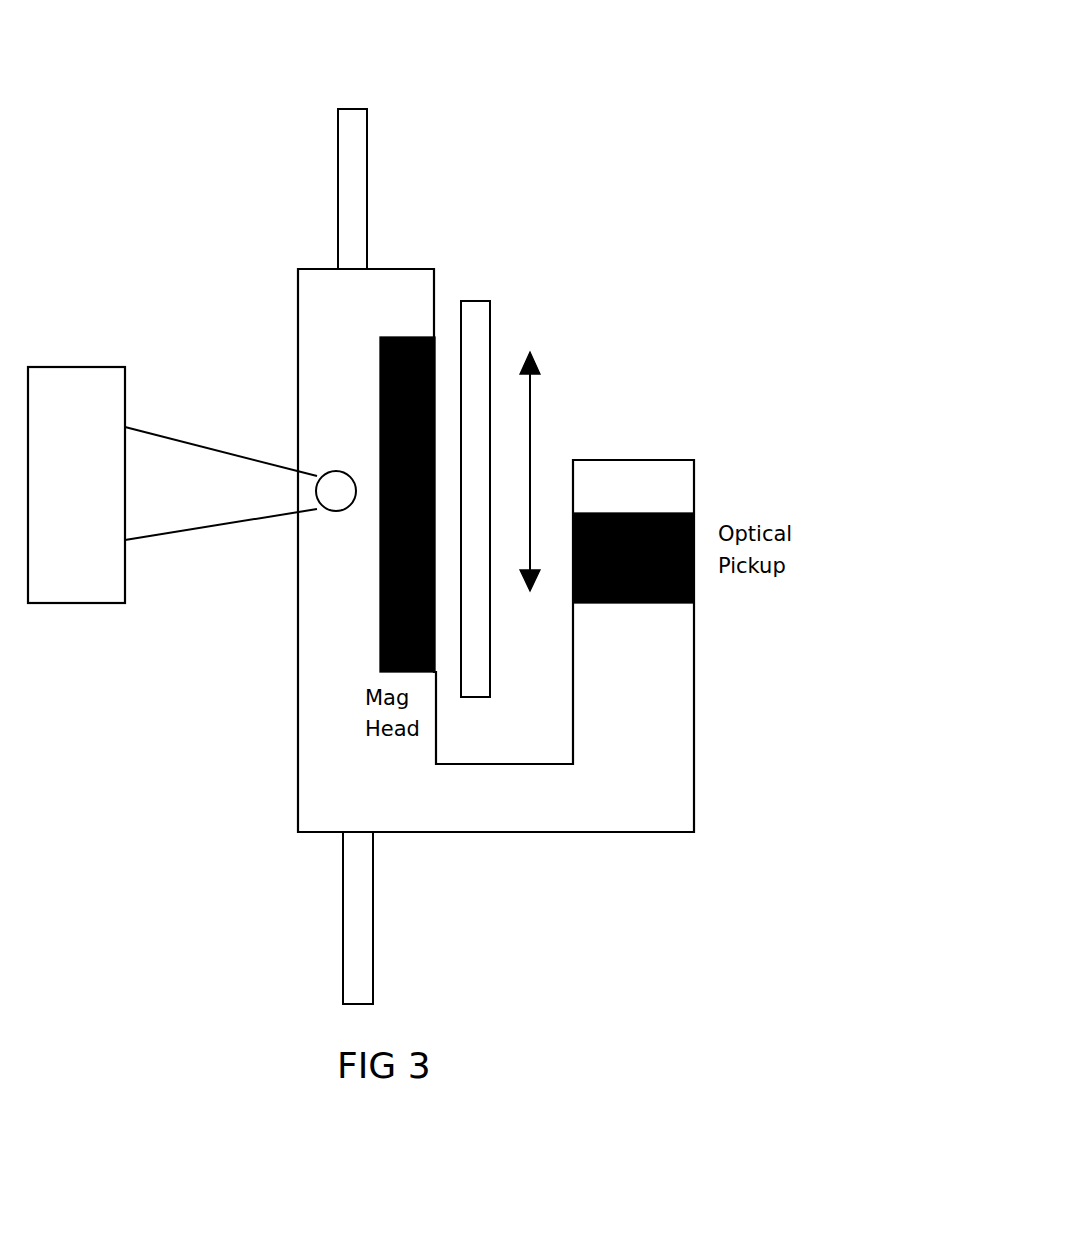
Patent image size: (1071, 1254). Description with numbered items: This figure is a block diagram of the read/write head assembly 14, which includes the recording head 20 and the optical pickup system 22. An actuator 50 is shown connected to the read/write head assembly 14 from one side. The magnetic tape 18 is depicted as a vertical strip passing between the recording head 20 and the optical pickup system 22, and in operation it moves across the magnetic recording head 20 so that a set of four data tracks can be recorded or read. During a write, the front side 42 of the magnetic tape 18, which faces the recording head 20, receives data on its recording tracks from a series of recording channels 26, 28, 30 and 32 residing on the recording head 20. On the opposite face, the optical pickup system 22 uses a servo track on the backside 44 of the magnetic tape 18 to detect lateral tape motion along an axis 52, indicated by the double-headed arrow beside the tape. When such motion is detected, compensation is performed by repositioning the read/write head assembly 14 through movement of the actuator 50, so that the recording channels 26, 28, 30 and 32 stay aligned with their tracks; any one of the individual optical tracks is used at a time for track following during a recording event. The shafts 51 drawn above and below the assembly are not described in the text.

The read/write head assembly 14 is at (718, 73).
The magnetic tape 18 is at (490, 365).
The recording head 20 is at (418, 338).
The optical pickup system 22 is at (663, 512).
The recording channel 26 is at (380, 366).
The recording channel 28 is at (380, 452).
The recording channel 30 is at (380, 552).
The recording channel 32 is at (386, 638).
The front side 42 is at (440, 688).
The backside 44 is at (492, 658).
The actuator 50 is at (57, 366).
The spindle shaft 51 is at (367, 202).
The axis 52 is at (549, 471).